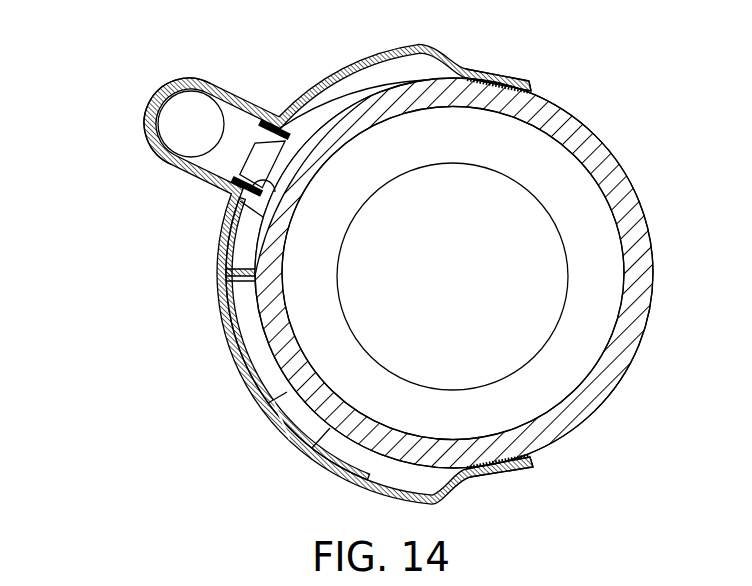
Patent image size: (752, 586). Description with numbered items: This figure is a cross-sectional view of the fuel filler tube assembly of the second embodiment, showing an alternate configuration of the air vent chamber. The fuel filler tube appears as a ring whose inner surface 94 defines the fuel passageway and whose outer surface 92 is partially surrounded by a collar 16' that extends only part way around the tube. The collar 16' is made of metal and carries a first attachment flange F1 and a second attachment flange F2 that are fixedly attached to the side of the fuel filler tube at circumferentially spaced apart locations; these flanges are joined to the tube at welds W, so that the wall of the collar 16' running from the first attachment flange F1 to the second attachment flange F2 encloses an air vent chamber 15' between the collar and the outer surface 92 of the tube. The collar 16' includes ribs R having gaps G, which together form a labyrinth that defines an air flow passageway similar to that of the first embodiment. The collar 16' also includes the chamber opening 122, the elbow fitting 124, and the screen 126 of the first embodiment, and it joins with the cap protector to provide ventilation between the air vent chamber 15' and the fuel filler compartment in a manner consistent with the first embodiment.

The outer surface 92 is at (625, 172).
The inner surface 94 is at (606, 190).
The ribs R is at (317, 109).
The collar 16' is at (338, 256).
The air vent chamber 15' is at (320, 246).
The elbow fitting 124 is at (155, 98).
The screen 126 is at (262, 164).
The chamber opening 122 is at (265, 189).
The first attachment flange F1 is at (496, 70).
The second attachment flange F2 is at (504, 478).
The welds W is at (501, 92).
The gaps G is at (284, 404).